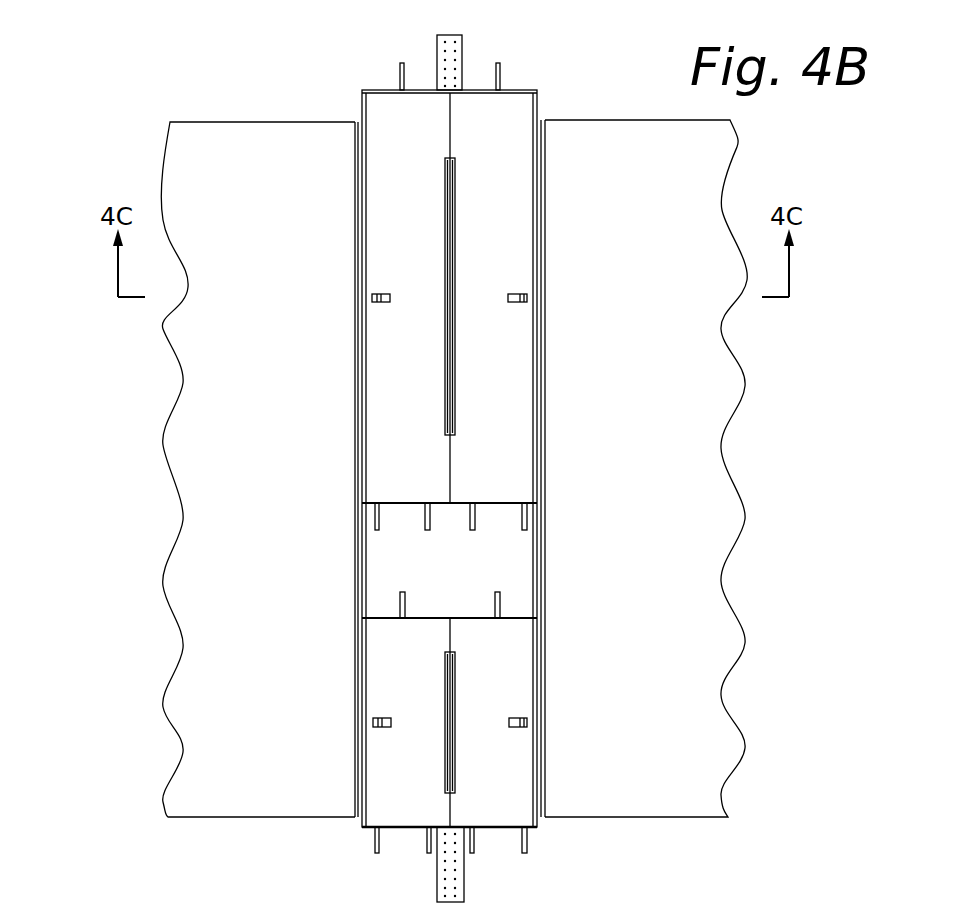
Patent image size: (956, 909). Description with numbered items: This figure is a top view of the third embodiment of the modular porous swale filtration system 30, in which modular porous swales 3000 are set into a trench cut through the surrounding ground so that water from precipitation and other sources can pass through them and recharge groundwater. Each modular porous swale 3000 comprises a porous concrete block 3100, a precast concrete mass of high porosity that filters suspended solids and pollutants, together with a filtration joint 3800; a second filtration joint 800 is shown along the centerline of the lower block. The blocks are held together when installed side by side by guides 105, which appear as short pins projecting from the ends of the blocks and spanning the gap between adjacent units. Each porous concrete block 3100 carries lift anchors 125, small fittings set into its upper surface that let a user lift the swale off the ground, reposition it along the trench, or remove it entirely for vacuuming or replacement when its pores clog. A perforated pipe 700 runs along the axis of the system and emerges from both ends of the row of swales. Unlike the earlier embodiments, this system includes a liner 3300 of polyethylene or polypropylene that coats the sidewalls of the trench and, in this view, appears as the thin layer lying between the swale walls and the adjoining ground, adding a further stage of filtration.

The modular porous swale filtration system 30 is at (93, 116).
The perforated pipe 700 is at (463, 46).
The modular porous swale 3000 is at (549, 94).
The liner 3300 is at (361, 117).
The porous concrete block 3100 is at (512, 186).
The lift anchors 125 is at (520, 280).
The filtration joint 3800 is at (462, 390).
The guides 105 is at (528, 520).
The filtration joint 800 is at (464, 680).